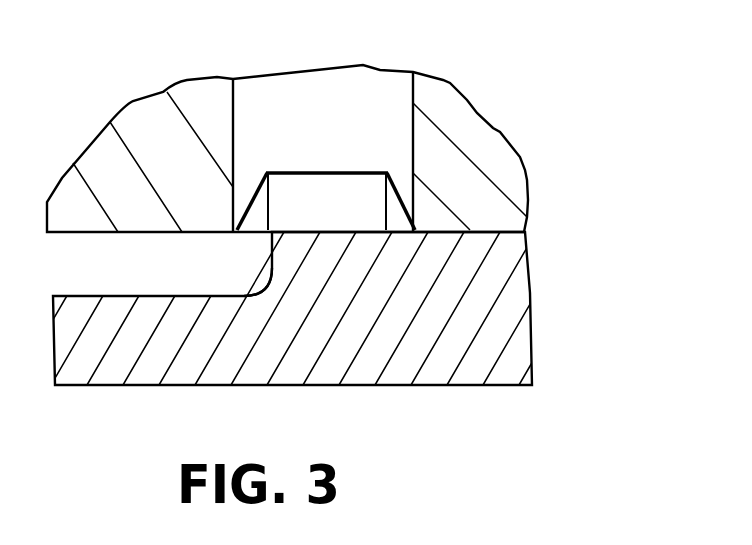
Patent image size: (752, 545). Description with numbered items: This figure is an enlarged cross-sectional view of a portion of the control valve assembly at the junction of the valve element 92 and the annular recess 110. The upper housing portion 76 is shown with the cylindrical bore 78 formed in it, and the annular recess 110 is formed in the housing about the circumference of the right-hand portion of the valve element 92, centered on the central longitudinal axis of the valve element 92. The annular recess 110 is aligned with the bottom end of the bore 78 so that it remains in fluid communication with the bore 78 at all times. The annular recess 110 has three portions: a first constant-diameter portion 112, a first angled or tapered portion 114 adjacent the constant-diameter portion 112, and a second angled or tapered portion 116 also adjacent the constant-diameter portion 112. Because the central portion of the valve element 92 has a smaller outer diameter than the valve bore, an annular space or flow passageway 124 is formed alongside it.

The upper housing portion 76 is at (135, 102).
The cylindrical bore 78 is at (317, 97).
The valve element 92 is at (530, 296).
The annular recess 110 is at (347, 166).
The constant-diameter portion 112 is at (379, 121).
The first tapered portion 114 is at (402, 202).
The second tapered portion 116 is at (252, 203).
The annular flow passageway 124 is at (125, 273).